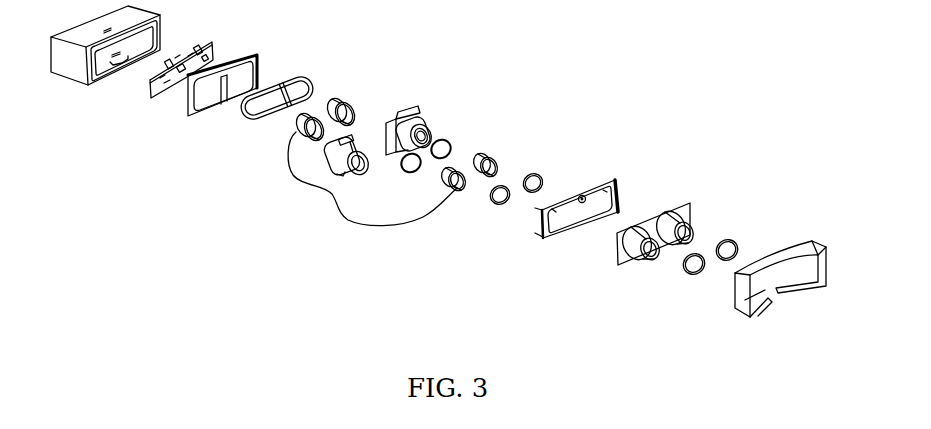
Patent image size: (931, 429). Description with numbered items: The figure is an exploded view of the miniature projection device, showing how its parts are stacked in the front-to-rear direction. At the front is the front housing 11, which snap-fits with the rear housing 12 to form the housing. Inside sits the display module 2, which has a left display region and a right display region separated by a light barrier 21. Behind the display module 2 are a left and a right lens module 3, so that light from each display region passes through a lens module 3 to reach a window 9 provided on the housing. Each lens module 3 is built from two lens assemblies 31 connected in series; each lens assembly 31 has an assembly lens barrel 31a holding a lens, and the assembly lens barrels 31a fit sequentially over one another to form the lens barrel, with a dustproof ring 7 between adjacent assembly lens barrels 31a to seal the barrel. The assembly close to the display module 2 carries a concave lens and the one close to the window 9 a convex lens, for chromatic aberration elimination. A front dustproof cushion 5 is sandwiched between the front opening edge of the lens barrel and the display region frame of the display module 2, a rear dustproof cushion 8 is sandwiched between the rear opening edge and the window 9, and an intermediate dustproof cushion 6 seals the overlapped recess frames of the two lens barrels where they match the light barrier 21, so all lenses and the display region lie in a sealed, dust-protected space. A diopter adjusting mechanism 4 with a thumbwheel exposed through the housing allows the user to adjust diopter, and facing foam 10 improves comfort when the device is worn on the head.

The front housing 11 is at (73, 72).
The display module 2 is at (193, 85).
The light barrier 21 is at (228, 86).
The front dustproof cushion 5 is at (252, 132).
The intermediate dustproof cushion 6 is at (310, 100).
The lens module 3 is at (332, 214).
The lens assembly 31 is at (405, 125).
The assembly lens barrel 31a is at (423, 133).
The dustproof ring 7 is at (447, 141).
The rear dustproof cushion 8 is at (530, 193).
The diopter adjusting mechanism 4 is at (557, 240).
The rear housing 12 is at (618, 258).
The window 9 is at (720, 262).
The facing foam 10 is at (744, 308).